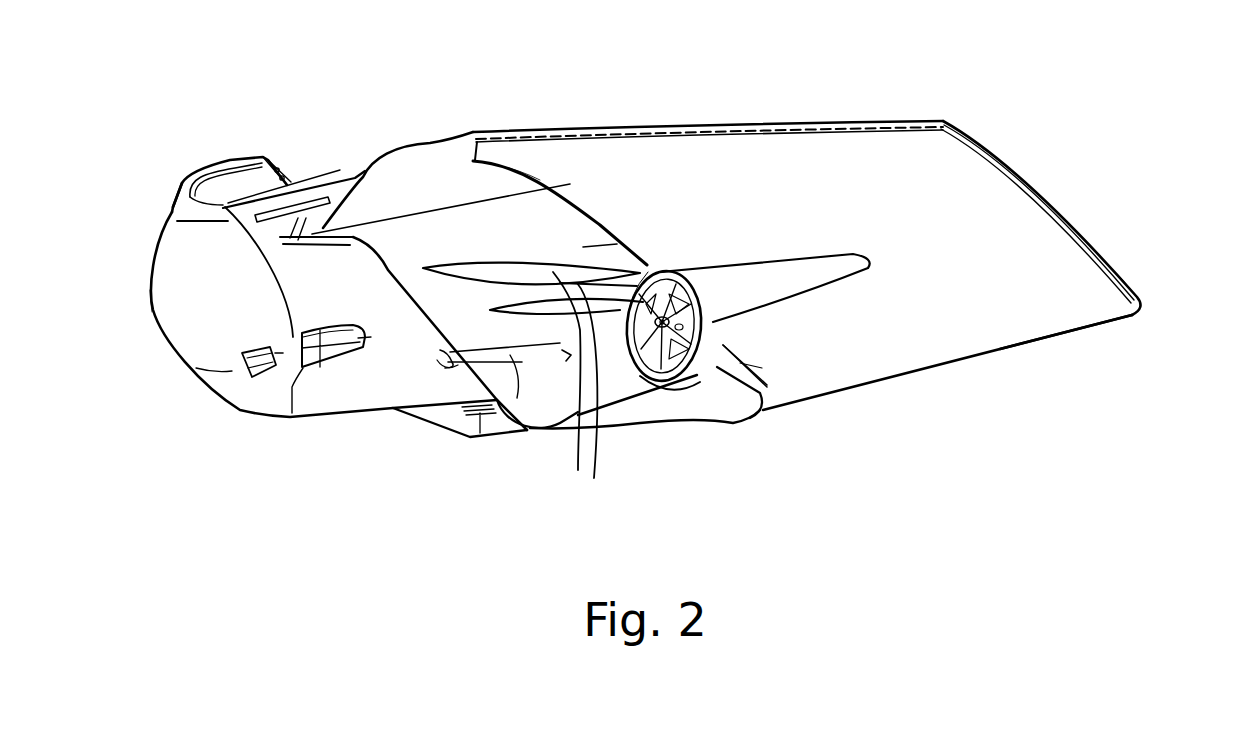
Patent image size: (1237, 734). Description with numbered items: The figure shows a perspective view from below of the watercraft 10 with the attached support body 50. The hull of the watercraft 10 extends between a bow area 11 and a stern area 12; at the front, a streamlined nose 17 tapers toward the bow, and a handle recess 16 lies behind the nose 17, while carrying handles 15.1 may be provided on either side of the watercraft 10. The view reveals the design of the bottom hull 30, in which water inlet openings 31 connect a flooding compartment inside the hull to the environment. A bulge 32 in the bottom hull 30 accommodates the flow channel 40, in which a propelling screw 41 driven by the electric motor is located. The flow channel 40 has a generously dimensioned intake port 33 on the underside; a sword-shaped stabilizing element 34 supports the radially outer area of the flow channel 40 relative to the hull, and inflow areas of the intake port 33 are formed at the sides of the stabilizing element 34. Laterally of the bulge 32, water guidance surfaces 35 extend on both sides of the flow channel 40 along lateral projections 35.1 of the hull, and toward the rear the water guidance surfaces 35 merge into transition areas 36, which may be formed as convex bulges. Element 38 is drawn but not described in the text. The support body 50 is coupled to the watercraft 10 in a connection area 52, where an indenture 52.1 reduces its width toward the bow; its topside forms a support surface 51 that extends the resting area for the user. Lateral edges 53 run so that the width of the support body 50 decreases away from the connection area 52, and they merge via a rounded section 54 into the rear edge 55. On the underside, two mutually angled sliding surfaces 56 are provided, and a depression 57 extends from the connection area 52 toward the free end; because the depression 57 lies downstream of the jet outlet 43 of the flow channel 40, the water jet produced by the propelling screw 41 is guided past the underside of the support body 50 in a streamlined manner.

The watercraft 10 is at (403, 118).
The bow area 11 is at (170, 264).
The stern area 12 is at (566, 178).
The carrying handles 15.1 is at (287, 185).
The handle recess 16 is at (227, 178).
The nose 17 is at (148, 316).
The bottom hull 30 is at (290, 426).
The water inlet openings 31 is at (252, 378).
The bulge 32 is at (553, 410).
The intake port 33 is at (435, 363).
The stabilizing element 34 is at (445, 393).
The water guidance surfaces 35 is at (453, 217).
The lateral projections 35.1 is at (476, 147).
The transition areas 36 is at (591, 228).
The shroud wall 38 is at (507, 410).
The flow channel 40 is at (683, 272).
The propelling screw 41 is at (655, 272).
The jet outlet 43 is at (724, 321).
The support body 50 is at (848, 100).
The support surface 51 is at (987, 147).
The connection area 52 is at (532, 197).
The indenture 52.1 is at (520, 158).
The lateral edges 53 is at (738, 124).
The rounded section 54 is at (945, 119).
The rear edge 55 is at (1040, 197).
The sliding surfaces 56 is at (1033, 303).
The depression 57 is at (845, 270).